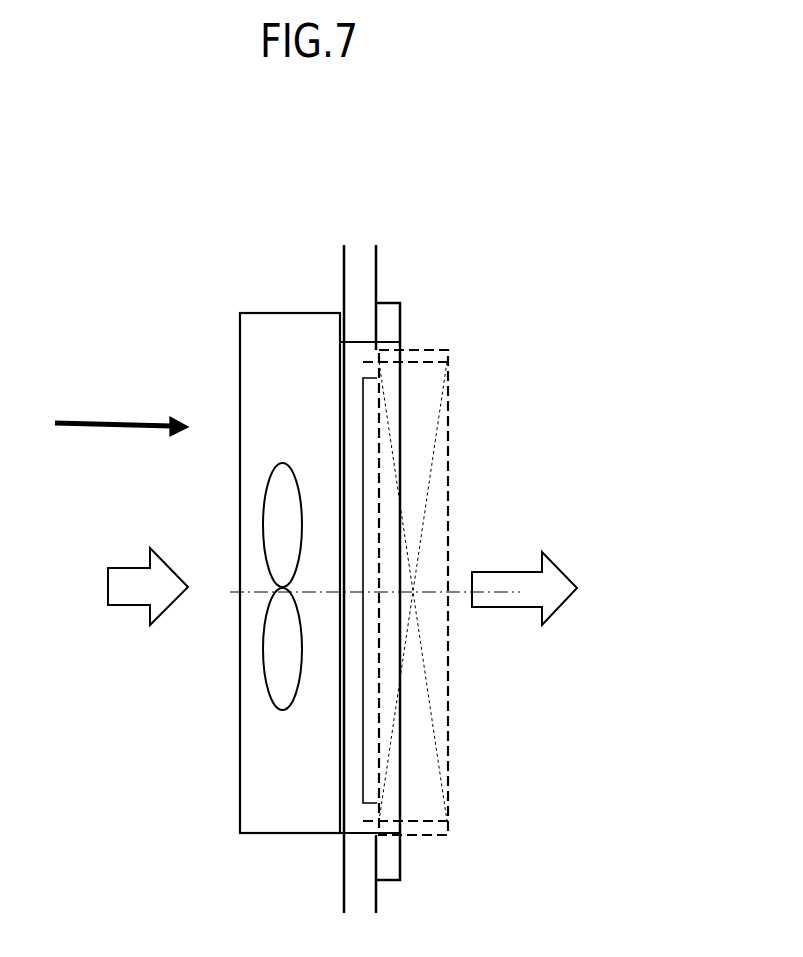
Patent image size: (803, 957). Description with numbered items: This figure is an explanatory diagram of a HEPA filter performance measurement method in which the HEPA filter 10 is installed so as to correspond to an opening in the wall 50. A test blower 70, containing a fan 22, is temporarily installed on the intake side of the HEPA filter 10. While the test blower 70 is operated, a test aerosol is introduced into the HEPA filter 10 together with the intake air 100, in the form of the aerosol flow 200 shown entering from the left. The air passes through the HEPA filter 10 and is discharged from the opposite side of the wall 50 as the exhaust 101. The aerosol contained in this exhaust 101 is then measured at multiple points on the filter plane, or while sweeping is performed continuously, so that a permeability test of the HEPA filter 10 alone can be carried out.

The HEPA filter 10 is at (447, 402).
The fan 22 is at (282, 648).
The wall 50 is at (367, 247).
The test blower 70 is at (287, 312).
The intake air 100 is at (125, 580).
The exhaust 101 is at (507, 568).
The aerosol flow 200 is at (83, 422).